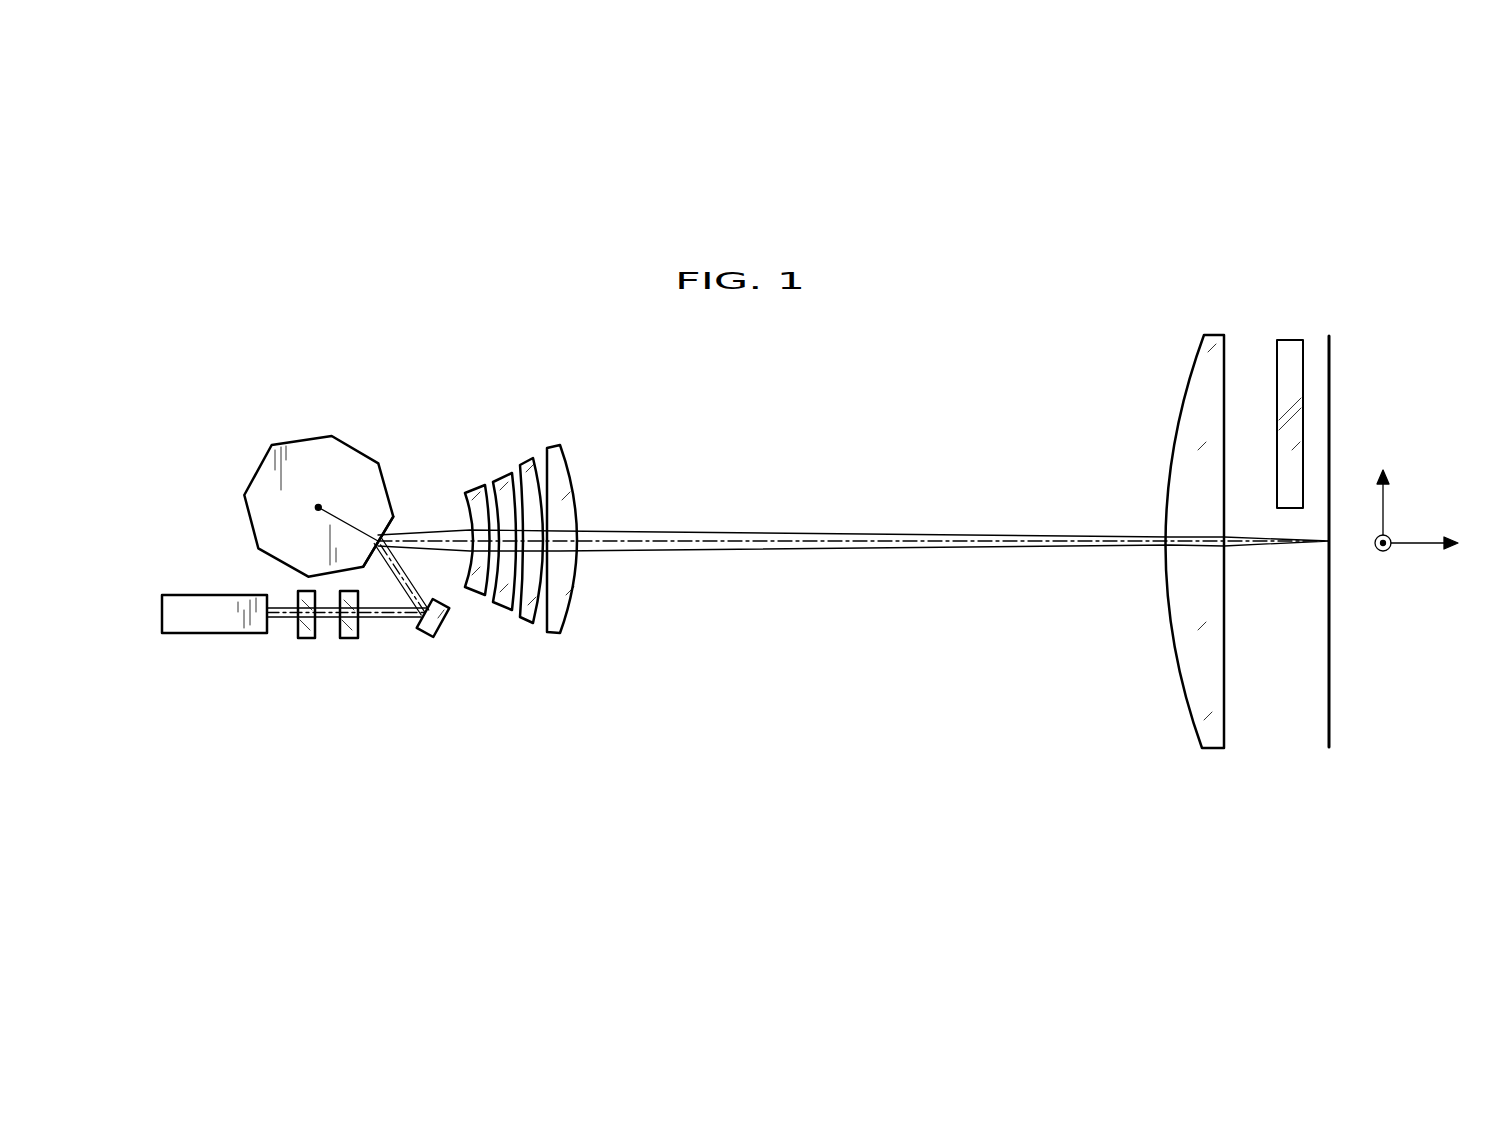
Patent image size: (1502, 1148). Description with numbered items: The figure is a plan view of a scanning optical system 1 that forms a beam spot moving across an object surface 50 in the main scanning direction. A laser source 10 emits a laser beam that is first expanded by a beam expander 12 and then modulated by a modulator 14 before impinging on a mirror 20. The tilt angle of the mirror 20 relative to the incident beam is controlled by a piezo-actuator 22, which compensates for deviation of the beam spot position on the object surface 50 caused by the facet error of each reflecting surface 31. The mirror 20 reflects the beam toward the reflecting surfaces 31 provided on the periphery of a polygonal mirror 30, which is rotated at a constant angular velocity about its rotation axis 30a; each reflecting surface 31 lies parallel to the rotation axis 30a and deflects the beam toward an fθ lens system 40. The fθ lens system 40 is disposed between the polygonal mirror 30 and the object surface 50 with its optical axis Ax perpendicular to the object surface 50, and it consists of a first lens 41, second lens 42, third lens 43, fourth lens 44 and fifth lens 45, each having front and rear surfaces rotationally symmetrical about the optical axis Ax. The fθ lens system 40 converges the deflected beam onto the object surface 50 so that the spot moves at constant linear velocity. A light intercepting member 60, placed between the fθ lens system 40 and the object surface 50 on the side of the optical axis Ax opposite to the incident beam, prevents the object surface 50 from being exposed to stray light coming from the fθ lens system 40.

The scanning optical system 1 is at (337, 389).
The laser source 10 is at (218, 634).
The beam expander 12 is at (305, 640).
The modulator 14 is at (350, 640).
The mirror 20 is at (423, 628).
The piezo-actuator 22 is at (433, 637).
The polygonal mirror 30 is at (257, 468).
The rotation axis 30a is at (318, 506).
The reflecting surface 31 is at (390, 523).
The fθ lens system 40 is at (843, 573).
The first lens 41 is at (473, 593).
The second lens 42 is at (498, 610).
The third lens 43 is at (525, 625).
The fourth lens 44 is at (553, 637).
The fifth lens 45 is at (1164, 541).
The object surface 50 is at (1329, 684).
The light intercepting member 60 is at (1293, 340).
The optical axis Ax is at (863, 538).